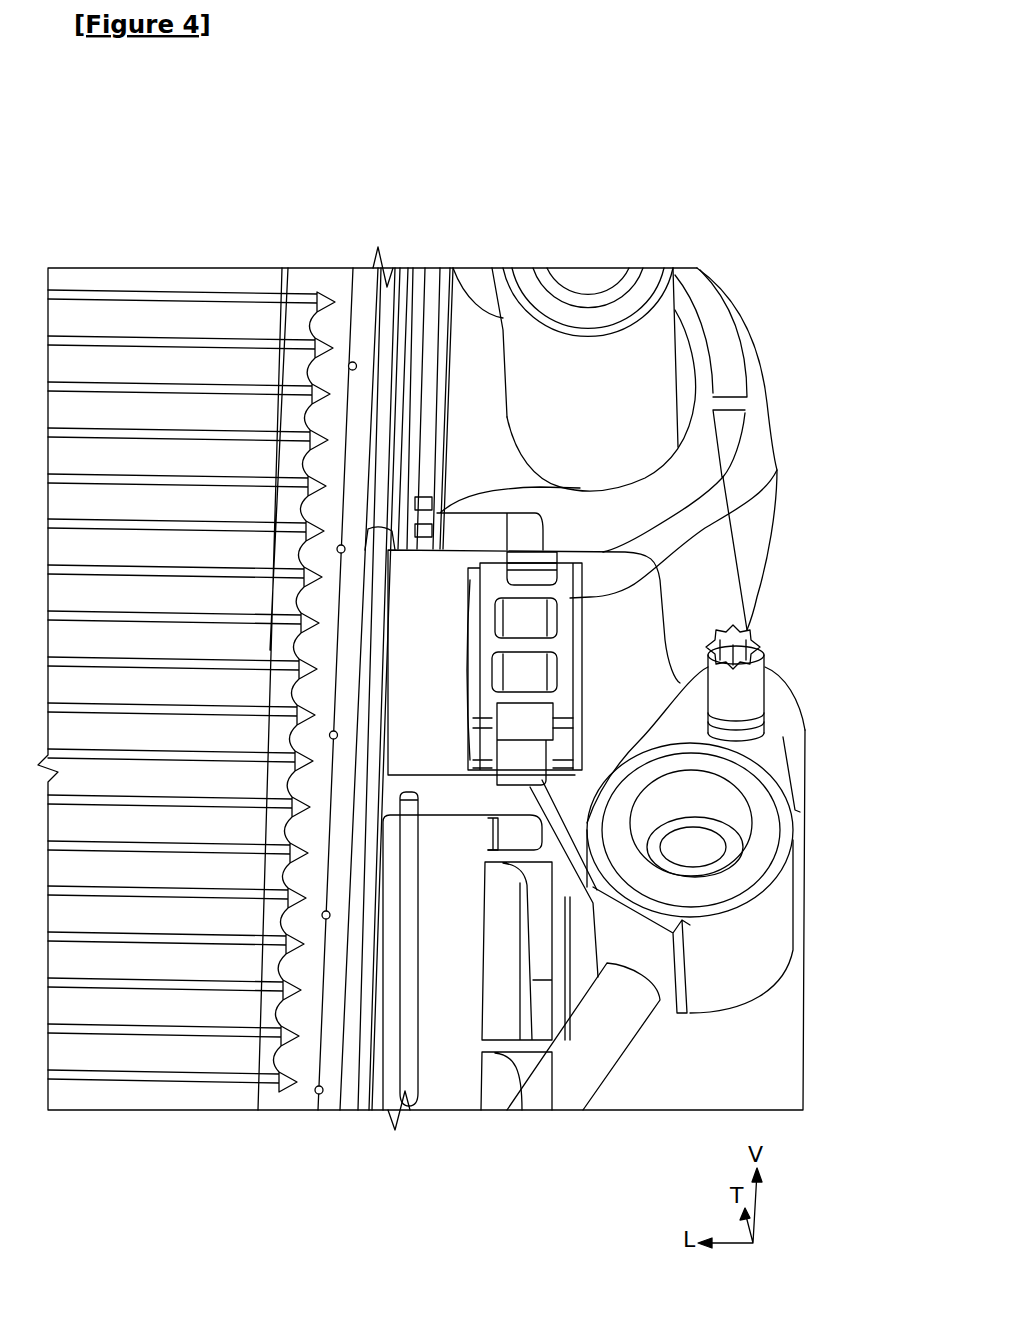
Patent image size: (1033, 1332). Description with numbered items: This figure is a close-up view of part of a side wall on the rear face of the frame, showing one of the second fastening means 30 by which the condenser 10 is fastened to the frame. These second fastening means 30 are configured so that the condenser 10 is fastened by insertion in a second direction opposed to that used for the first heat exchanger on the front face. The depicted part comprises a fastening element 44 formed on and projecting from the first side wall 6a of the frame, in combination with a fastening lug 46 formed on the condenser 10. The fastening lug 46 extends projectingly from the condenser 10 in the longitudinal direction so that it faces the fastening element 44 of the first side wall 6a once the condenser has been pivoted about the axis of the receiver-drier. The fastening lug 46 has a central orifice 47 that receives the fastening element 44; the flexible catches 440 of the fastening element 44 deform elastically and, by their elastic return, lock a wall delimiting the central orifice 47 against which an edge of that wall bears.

The condenser 10 is at (141, 355).
The first side wall 6a is at (465, 378).
The second fastening means 30 is at (557, 549).
The fastening element 44 is at (775, 486).
The fastening lug 46 is at (640, 630).
The flexible catches 440 is at (535, 758).
The central orifice 47 is at (462, 693).